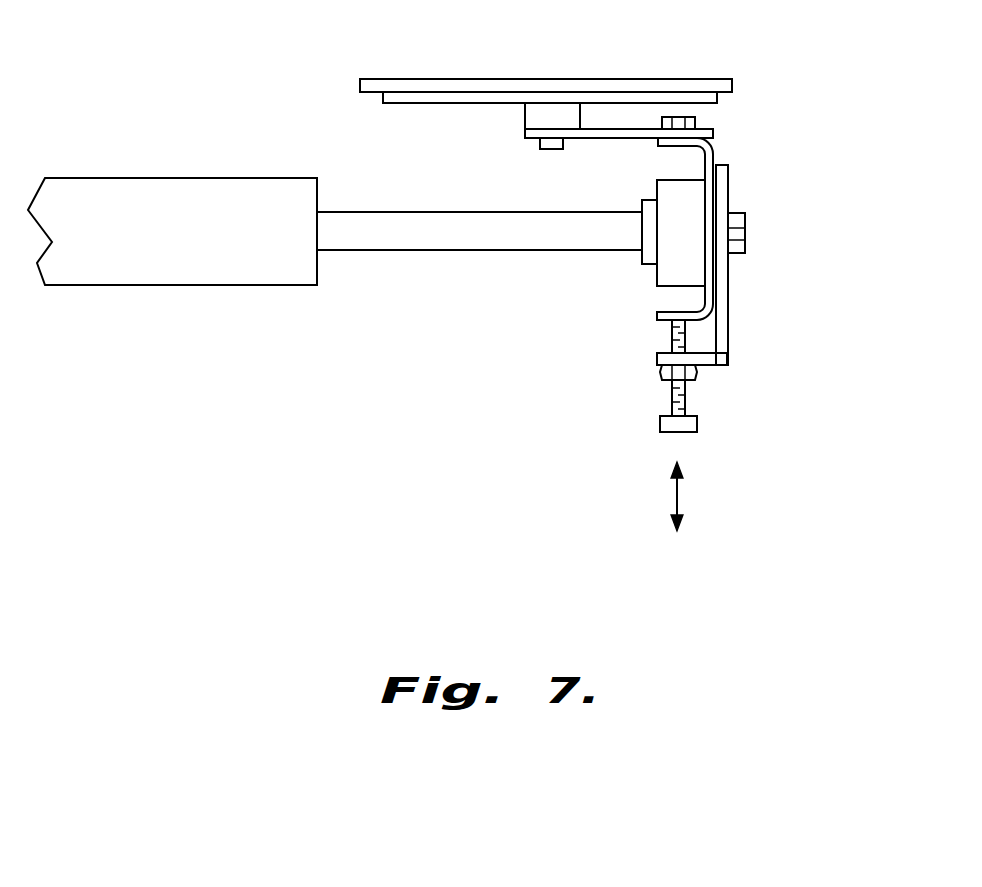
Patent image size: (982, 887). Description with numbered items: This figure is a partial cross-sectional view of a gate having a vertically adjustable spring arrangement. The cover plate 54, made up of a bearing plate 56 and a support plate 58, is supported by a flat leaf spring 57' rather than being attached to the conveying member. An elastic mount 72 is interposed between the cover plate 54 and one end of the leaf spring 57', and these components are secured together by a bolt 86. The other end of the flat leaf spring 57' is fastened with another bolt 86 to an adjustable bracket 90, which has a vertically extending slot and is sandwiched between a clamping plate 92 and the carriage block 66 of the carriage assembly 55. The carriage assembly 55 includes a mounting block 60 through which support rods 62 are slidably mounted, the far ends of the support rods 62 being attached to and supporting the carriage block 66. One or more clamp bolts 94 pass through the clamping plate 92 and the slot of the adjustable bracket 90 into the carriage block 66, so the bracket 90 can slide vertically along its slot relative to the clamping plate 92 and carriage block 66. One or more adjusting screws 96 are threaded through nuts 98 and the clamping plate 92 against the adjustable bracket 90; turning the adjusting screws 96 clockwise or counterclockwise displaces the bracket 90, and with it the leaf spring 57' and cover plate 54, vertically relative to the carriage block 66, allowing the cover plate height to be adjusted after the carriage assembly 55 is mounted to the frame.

The cover plate 54 is at (323, 80).
The carriage assembly 55 is at (464, 406).
The bearing plate 56 is at (393, 90).
The flat leaf spring 57' is at (689, 122).
The support plate 58 is at (404, 103).
The mounting block 60 is at (228, 268).
The support rods 62 is at (502, 243).
The carriage block 66 is at (668, 273).
The elastic mount 72 is at (535, 117).
The bolt 86 is at (695, 123).
The adjustable bracket 90 is at (713, 150).
The clamping plate 92 is at (723, 187).
The clamp bolts 94 is at (745, 233).
The adjusting screws 96 is at (697, 425).
The nuts 98 is at (697, 375).